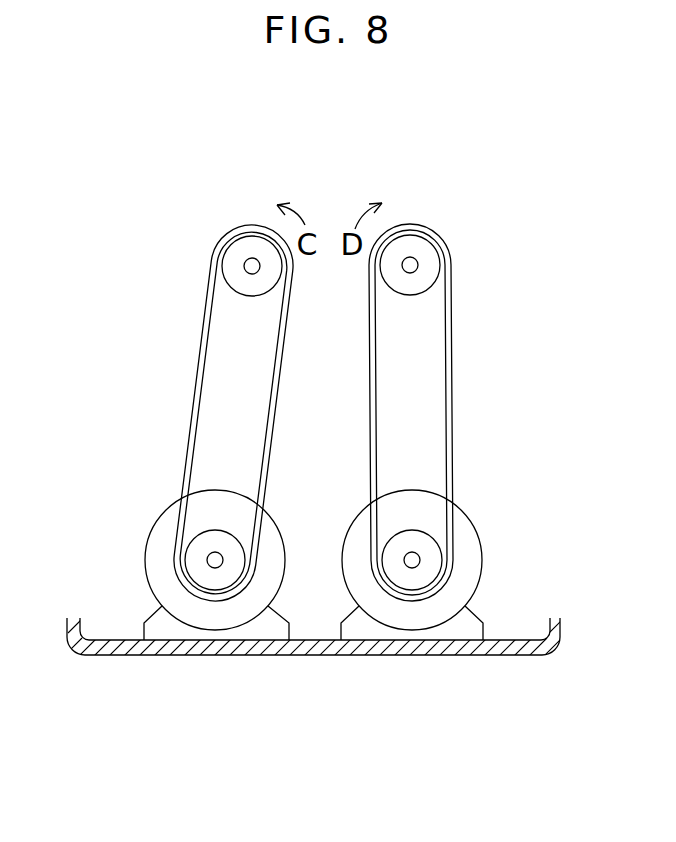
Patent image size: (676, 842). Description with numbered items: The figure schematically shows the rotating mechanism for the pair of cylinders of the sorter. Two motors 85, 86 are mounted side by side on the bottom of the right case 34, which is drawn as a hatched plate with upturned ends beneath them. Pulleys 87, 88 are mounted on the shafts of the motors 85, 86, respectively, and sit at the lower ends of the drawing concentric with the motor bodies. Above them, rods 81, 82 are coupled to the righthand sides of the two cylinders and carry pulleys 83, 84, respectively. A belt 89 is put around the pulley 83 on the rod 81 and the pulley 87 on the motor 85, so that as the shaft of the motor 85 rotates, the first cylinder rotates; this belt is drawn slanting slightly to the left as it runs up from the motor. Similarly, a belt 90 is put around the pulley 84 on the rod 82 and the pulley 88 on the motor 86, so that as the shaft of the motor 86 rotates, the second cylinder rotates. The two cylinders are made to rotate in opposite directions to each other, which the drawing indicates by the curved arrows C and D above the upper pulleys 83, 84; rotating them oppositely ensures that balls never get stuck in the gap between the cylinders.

The right case 34 is at (535, 652).
The rod 81 is at (250, 254).
The rod 82 is at (408, 253).
The pulley 83 is at (233, 252).
The pulley 84 is at (427, 255).
The motor 85 is at (143, 543).
The motor 86 is at (480, 553).
The pulley 87 is at (223, 526).
The pulley 88 is at (410, 526).
The belt 89 is at (195, 390).
The belt 90 is at (452, 395).